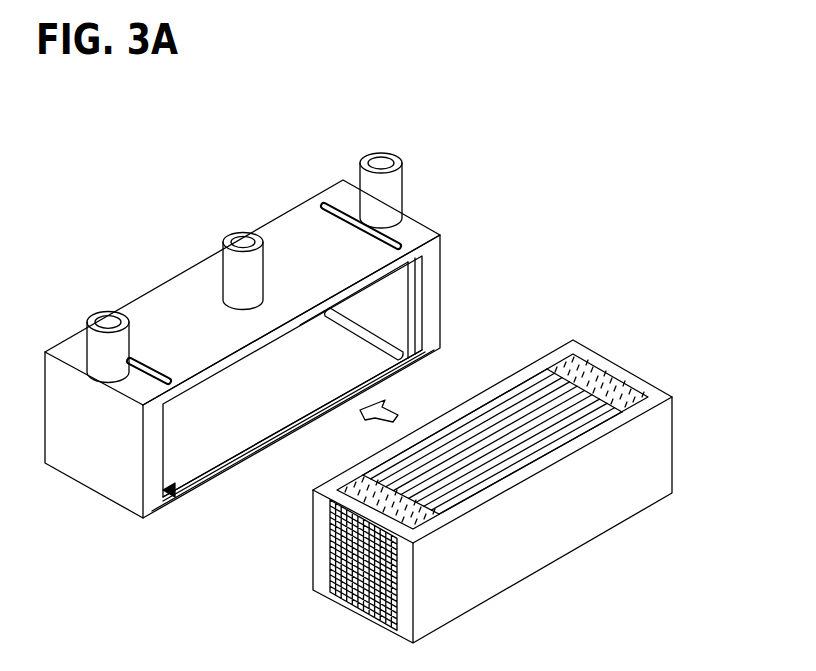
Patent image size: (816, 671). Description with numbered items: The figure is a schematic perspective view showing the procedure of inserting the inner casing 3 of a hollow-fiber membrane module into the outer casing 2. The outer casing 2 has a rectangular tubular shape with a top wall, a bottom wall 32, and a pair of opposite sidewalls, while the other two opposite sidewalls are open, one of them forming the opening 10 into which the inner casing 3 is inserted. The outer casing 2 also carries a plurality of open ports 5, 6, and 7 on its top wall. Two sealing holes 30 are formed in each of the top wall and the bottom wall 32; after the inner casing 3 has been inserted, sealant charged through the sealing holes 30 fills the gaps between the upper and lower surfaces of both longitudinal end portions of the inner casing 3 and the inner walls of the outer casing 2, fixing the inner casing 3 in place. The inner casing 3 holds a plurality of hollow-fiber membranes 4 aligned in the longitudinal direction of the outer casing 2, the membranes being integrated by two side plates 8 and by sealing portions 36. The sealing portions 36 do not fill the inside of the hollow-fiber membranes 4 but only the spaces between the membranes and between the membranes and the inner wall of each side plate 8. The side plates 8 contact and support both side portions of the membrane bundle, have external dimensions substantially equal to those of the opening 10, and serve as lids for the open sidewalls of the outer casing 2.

The outer casing 2 is at (447, 143).
The inner casing 3 is at (644, 339).
The hollow-fiber membranes 4 is at (343, 598).
The open port 5 is at (97, 360).
The open port 6 is at (230, 275).
The open port 7 is at (393, 195).
The side plates 8 is at (553, 358).
The opening 10 is at (293, 425).
The sealing holes 30 is at (393, 240).
The bottom wall 32 is at (353, 353).
The sealing portions 36 is at (598, 362).